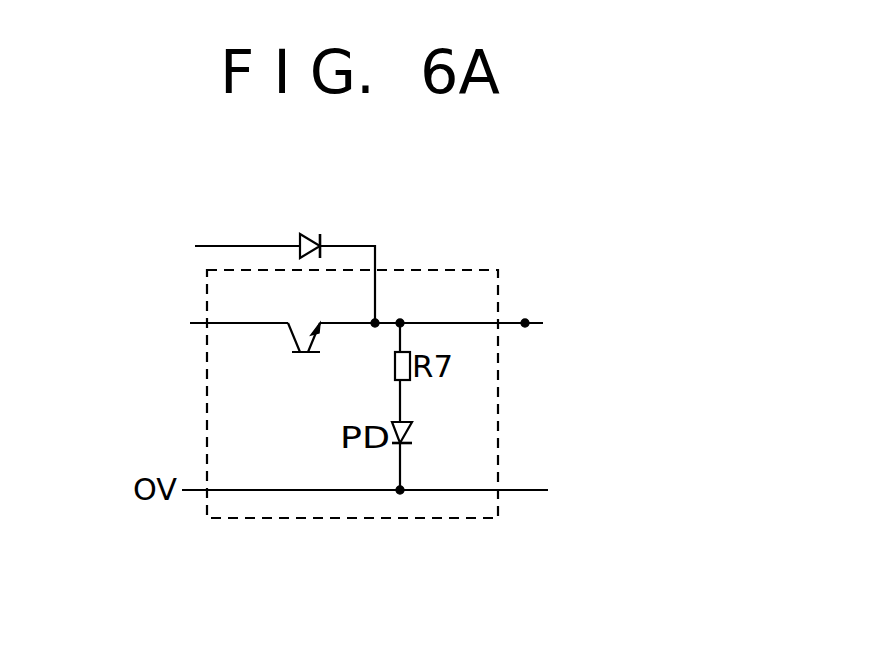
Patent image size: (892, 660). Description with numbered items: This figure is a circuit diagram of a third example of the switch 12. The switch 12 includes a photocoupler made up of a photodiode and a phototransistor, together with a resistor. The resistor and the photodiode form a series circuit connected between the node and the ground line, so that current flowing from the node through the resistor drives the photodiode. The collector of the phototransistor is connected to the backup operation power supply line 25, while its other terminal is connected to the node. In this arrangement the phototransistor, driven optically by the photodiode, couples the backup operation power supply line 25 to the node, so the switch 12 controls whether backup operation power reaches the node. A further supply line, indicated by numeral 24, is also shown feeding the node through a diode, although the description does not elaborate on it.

The +3.3V power supply line 24 is at (212, 246).
The backup operation power supply line 25 is at (197, 326).
The switch 12 is at (437, 518).